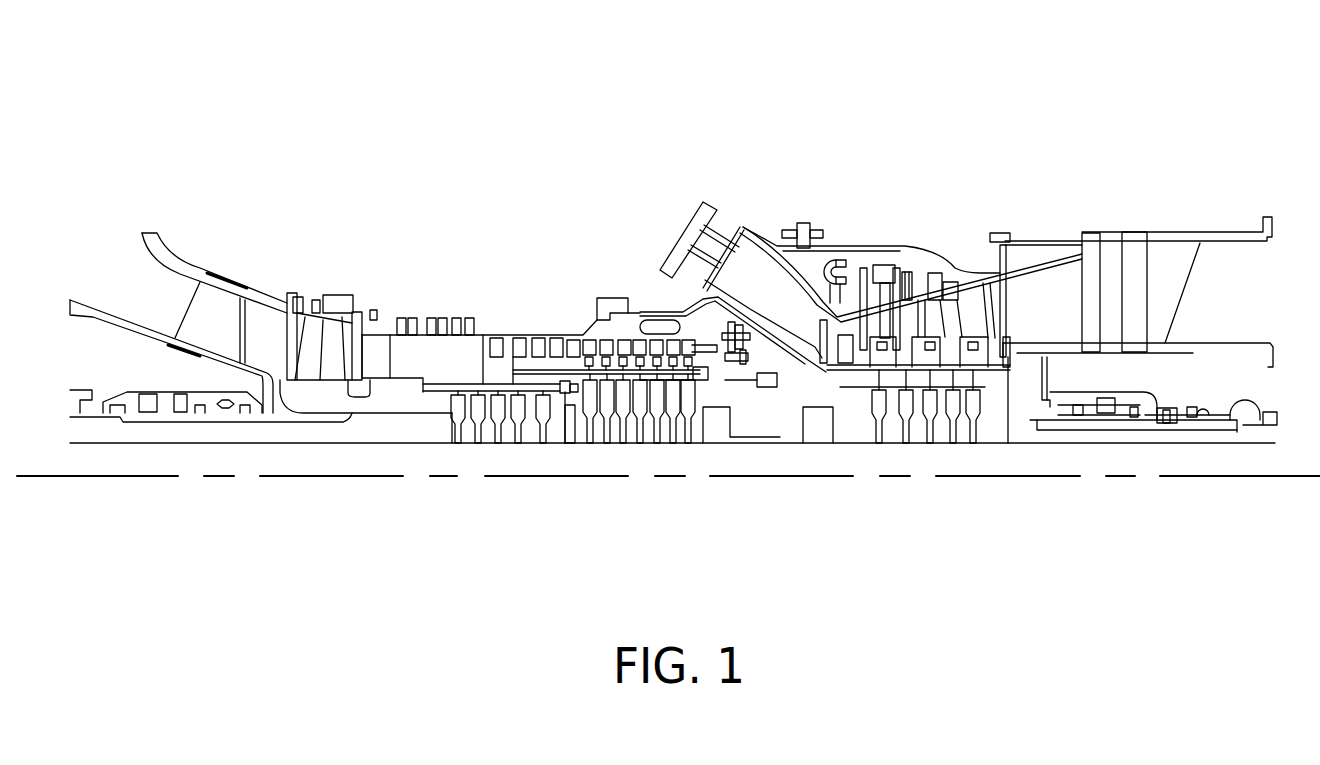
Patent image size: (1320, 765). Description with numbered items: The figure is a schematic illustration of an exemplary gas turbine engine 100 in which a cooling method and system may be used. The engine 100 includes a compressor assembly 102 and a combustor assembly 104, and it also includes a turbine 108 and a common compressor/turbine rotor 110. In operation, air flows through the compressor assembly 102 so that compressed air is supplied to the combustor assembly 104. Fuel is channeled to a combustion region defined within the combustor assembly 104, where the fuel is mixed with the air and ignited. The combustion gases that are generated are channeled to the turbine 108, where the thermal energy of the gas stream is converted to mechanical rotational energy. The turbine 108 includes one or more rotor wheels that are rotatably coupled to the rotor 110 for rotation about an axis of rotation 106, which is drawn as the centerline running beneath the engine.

The gas turbine engine 100 is at (303, 98).
The compressor assembly 102 is at (431, 315).
The combustor assembly 104 is at (780, 178).
The axis of rotation 106 is at (884, 490).
The turbine 108 is at (944, 265).
The common compressor/turbine rotor 110 is at (483, 455).